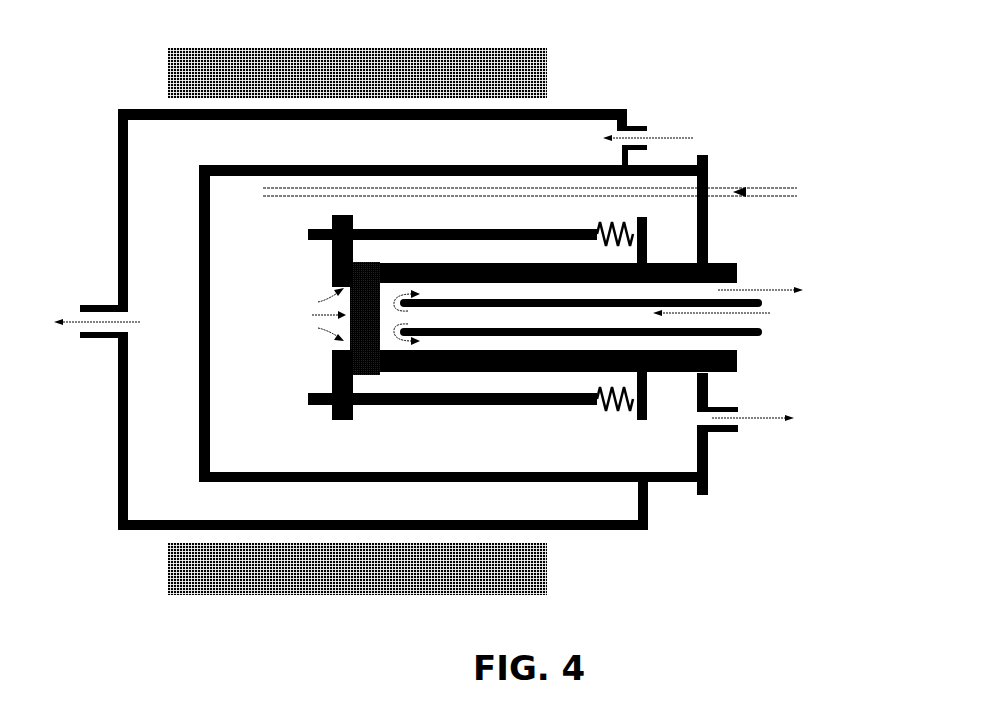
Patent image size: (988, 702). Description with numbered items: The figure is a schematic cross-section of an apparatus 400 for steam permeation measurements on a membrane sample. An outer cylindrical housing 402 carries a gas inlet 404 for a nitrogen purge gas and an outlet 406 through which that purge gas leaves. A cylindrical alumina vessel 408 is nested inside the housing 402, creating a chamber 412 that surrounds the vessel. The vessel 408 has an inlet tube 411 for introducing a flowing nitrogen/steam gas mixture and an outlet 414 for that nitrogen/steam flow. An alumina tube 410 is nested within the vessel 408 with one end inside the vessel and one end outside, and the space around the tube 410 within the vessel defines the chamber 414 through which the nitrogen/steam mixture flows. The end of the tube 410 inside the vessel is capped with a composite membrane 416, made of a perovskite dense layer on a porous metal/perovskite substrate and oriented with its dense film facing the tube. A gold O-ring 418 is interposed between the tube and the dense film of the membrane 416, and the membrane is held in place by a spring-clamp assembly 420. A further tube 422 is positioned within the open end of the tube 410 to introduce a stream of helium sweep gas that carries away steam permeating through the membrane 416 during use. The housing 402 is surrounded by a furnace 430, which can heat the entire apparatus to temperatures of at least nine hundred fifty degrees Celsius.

The apparatus 400 is at (112, 62).
The outer cylindrical housing 402 is at (115, 246).
The gas inlet 404 is at (637, 132).
The outlet 406 is at (88, 327).
The cylindrical alumina vessel 408 is at (687, 483).
The alumina tube 410 is at (550, 376).
The inlet tube 411 is at (713, 185).
The chamber 412 is at (164, 320).
The outlet / chamber 414 is at (733, 478).
The composite membrane 416 is at (363, 384).
The gold O-ring 418 is at (384, 377).
The spring-clamp assembly 420 is at (623, 433).
The tube 422 is at (740, 335).
The furnace 430 is at (547, 60).